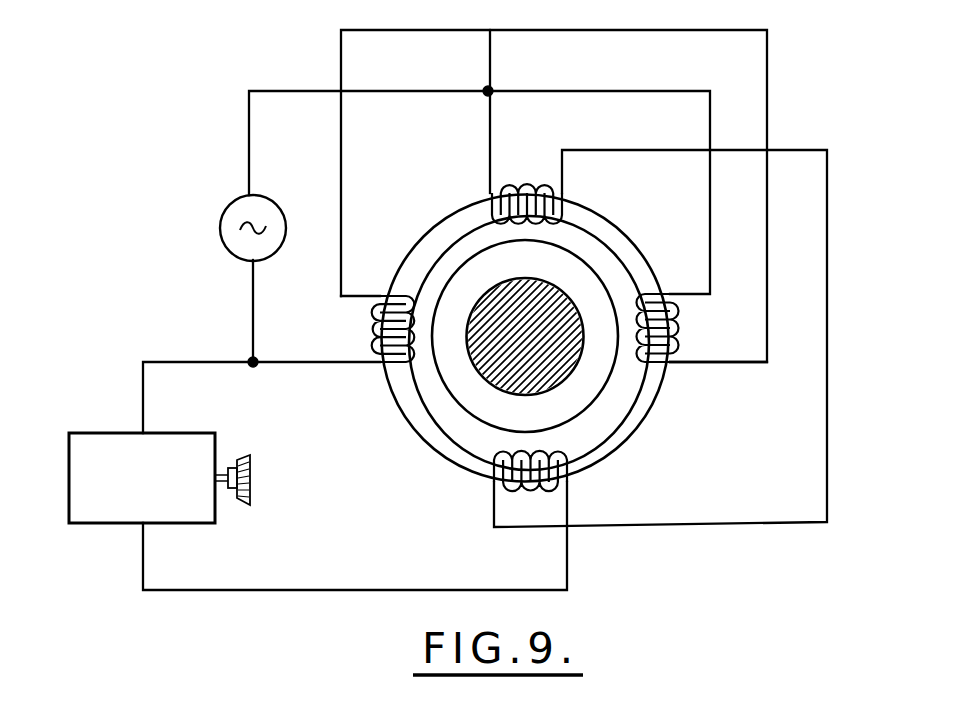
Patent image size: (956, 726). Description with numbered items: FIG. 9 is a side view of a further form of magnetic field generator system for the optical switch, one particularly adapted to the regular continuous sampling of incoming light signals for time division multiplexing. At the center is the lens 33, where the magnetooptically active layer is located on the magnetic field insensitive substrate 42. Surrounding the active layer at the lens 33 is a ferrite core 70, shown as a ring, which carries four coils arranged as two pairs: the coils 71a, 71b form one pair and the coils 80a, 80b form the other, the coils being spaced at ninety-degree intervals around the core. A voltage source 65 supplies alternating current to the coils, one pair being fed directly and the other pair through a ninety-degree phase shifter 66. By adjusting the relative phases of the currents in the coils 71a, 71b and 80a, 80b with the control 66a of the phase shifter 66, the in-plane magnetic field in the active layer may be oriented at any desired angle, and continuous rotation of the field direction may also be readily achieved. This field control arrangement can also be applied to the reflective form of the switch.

The lens 33 is at (536, 292).
The magnetic field insensitive substrate 42 is at (582, 403).
The AC voltage source 65 is at (223, 214).
The phase shifter 66 is at (108, 432).
The control 66a is at (250, 480).
The ferrite core 70 is at (601, 463).
The coil 71a is at (492, 190).
The coil 71b is at (494, 486).
The coil 80a is at (380, 363).
The coil 80b is at (684, 363).